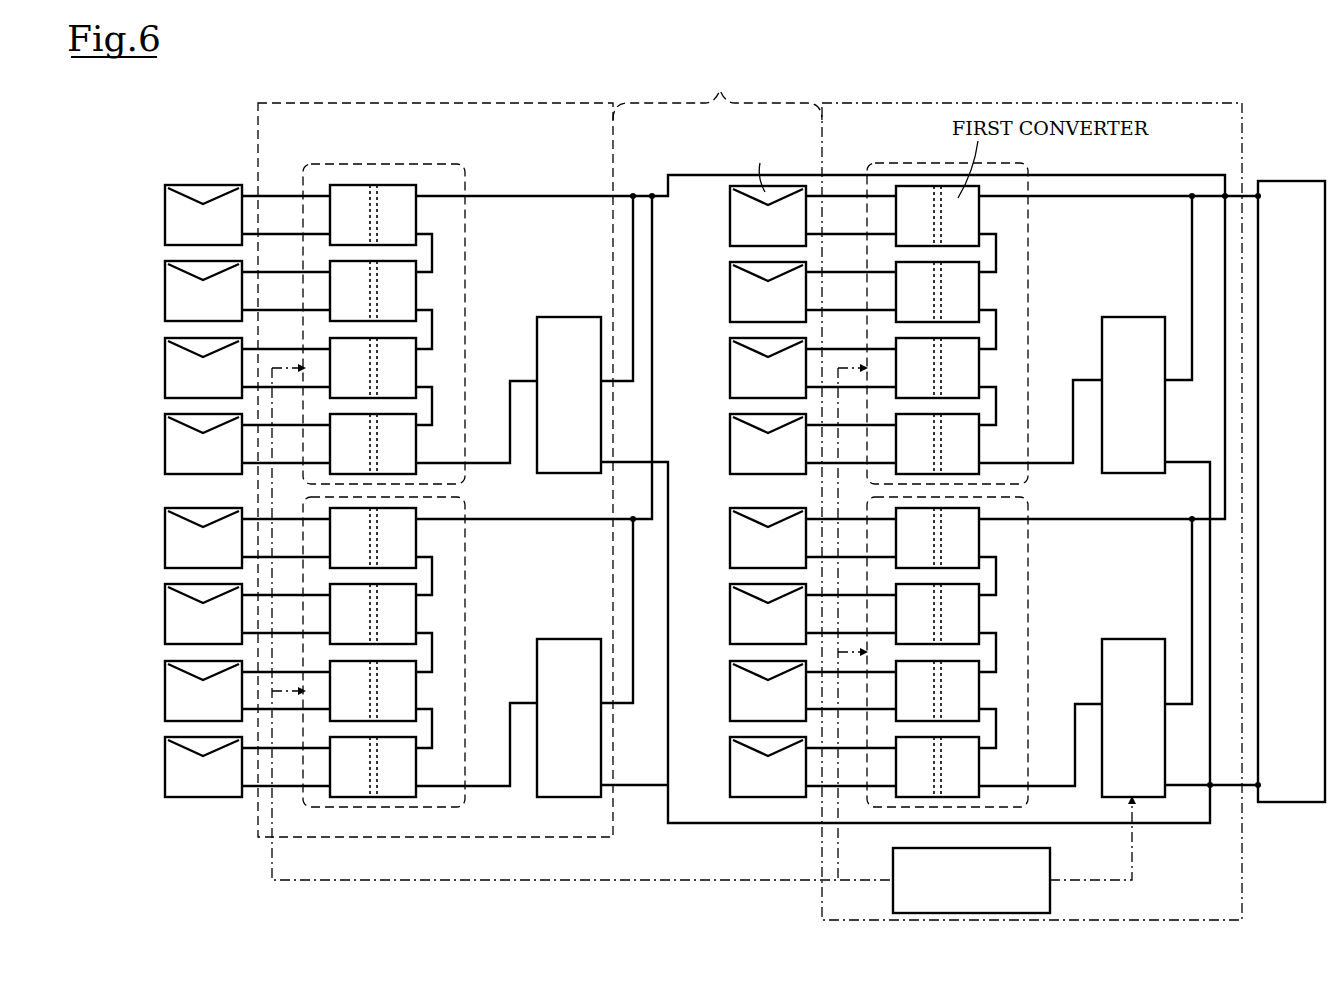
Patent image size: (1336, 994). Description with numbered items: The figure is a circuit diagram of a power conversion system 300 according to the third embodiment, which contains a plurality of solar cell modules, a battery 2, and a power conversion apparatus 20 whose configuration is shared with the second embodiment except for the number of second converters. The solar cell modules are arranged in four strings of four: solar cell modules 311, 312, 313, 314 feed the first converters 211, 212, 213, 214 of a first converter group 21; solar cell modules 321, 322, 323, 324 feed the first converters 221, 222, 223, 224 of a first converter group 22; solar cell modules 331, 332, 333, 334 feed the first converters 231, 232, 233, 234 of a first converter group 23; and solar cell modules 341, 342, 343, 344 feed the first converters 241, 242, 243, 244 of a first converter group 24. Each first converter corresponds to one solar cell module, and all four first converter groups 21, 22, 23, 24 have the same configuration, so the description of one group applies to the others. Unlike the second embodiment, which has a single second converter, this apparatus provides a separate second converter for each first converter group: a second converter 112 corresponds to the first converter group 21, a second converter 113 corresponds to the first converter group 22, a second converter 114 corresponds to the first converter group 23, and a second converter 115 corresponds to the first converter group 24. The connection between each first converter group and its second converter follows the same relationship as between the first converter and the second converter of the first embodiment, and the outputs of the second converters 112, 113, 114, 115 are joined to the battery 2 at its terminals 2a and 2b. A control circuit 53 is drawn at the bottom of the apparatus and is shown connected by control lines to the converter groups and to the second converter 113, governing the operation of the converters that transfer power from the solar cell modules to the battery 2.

The battery 2 is at (1288, 180).
The positive terminal of battery 2a is at (1262, 196).
The negative terminal of battery 2b is at (1262, 785).
The power conversion apparatus 20 is at (722, 98).
The first converter group 21 is at (906, 163).
The first converter group 22 is at (880, 808).
The first converter group 23 is at (373, 163).
The first converter group 24 is at (333, 808).
The control circuit 53 is at (1050, 858).
The second converter 112 is at (1128, 316).
The second converter 113 is at (1128, 638).
The second converter 114 is at (563, 316).
The second converter 115 is at (563, 638).
The first converter 211 is at (979, 212).
The first converter 212 is at (979, 289).
The first converter 213 is at (979, 359).
The first converter 214 is at (983, 476).
The first converter 221 is at (979, 539).
The first converter 222 is at (979, 611).
The first converter 223 is at (979, 684).
The first converter 224 is at (983, 799).
The first converter 231 is at (416, 212).
The first converter 232 is at (416, 289).
The first converter 233 is at (416, 359).
The first converter 234 is at (420, 476).
The first converter 241 is at (416, 539).
The first converter 242 is at (416, 611).
The first converter 243 is at (416, 684).
The first converter 244 is at (420, 799).
The power conversion system 300 is at (1277, 103).
The solar cell module 311 is at (730, 228).
The solar cell module 312 is at (730, 293).
The solar cell module 313 is at (730, 366).
The solar cell module 314 is at (730, 443).
The solar cell module 321 is at (730, 553).
The solar cell module 322 is at (730, 628).
The solar cell module 323 is at (730, 688).
The solar cell module 324 is at (730, 768).
The solar cell module 331 is at (165, 210).
The solar cell module 332 is at (165, 285).
The solar cell module 333 is at (165, 362).
The solar cell module 334 is at (165, 437).
The solar cell module 341 is at (165, 532).
The solar cell module 342 is at (165, 607).
The solar cell module 343 is at (165, 684).
The solar cell module 344 is at (165, 759).